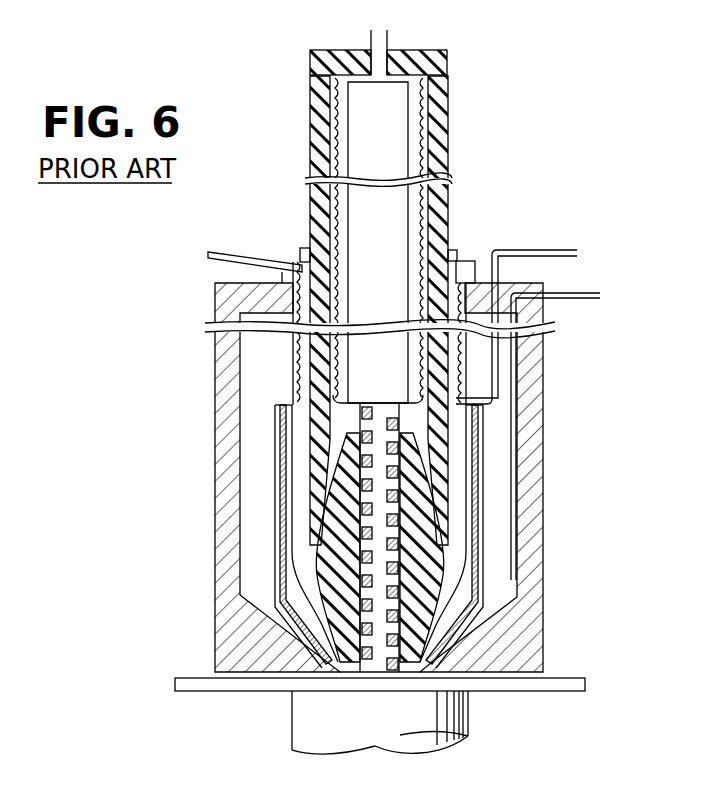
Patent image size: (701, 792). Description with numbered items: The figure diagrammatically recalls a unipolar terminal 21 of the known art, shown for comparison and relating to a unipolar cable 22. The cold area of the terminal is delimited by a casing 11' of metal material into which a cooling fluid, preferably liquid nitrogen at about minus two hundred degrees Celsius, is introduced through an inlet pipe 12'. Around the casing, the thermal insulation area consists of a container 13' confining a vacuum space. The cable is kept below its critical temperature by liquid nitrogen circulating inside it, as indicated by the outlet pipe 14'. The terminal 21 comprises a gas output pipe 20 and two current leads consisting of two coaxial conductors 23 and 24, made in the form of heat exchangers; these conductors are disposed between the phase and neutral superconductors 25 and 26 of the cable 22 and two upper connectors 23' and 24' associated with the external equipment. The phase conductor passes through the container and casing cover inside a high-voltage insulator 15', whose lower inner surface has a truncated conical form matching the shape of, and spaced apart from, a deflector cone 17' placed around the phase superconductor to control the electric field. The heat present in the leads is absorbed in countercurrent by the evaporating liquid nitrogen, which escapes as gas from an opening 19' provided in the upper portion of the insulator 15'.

The opening 19' is at (412, 46).
The upper connector 23' is at (403, 58).
The high-voltage insulator 15' is at (412, 310).
The coaxial conductor 23 is at (412, 242).
The upper connector 24' is at (346, 231).
The gas output pipe 20 is at (209, 249).
The inlet pipe 12' is at (539, 310).
The outlet pipe 14' is at (567, 419).
The coaxial conductor 24 is at (374, 241).
The terminal 21 is at (155, 414).
The container 13' is at (409, 477).
The casing 11' is at (433, 536).
The deflector cone 17' is at (454, 547).
The neutral superconductor 26 is at (292, 578).
The phase superconductor 25 is at (383, 658).
The unipolar cable 22 is at (292, 727).